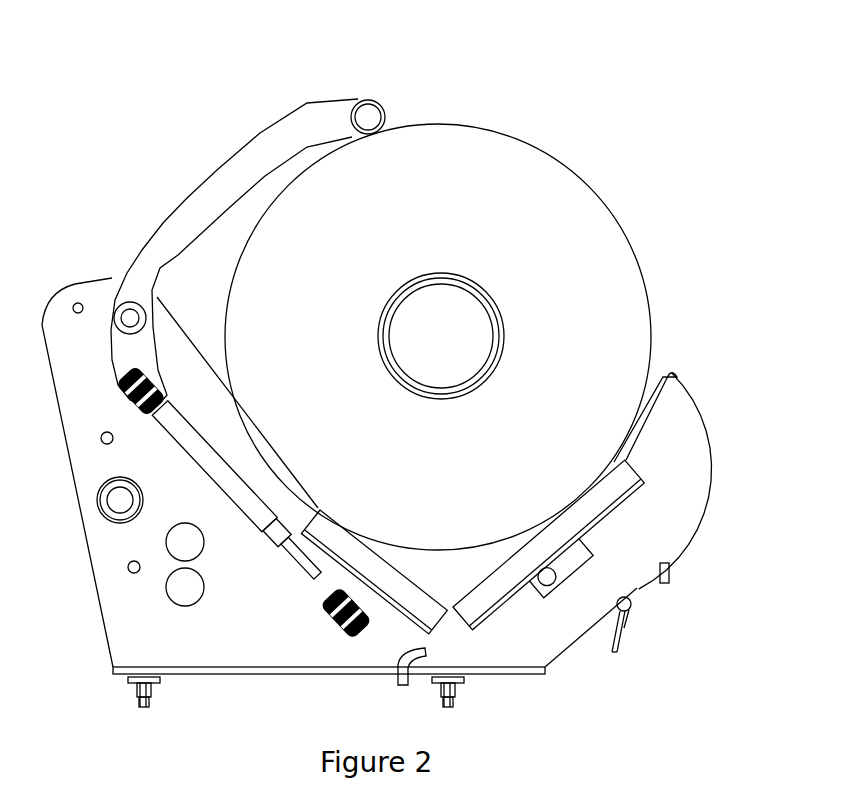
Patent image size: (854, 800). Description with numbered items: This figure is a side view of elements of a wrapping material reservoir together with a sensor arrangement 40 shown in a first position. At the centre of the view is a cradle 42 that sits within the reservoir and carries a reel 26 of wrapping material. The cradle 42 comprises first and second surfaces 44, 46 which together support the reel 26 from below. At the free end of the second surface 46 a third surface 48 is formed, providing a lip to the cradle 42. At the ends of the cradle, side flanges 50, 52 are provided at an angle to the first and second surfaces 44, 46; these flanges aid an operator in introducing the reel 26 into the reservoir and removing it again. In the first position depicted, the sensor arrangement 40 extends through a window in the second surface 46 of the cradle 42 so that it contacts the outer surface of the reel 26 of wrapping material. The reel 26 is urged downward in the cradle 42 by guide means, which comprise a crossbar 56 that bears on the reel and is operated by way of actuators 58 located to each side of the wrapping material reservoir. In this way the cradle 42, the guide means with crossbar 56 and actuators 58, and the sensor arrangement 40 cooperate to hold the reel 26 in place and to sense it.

The reel of wrapping material 26 is at (549, 147).
The sensor arrangement 40 is at (578, 572).
The cradle 42 is at (437, 573).
The first surface 44 is at (410, 548).
The second surface 46 is at (485, 572).
The third surface 48 is at (652, 414).
The side flange 50 is at (340, 545).
The side flange 52 is at (607, 495).
The crossbar 56 is at (385, 108).
The actuator 58 is at (190, 447).